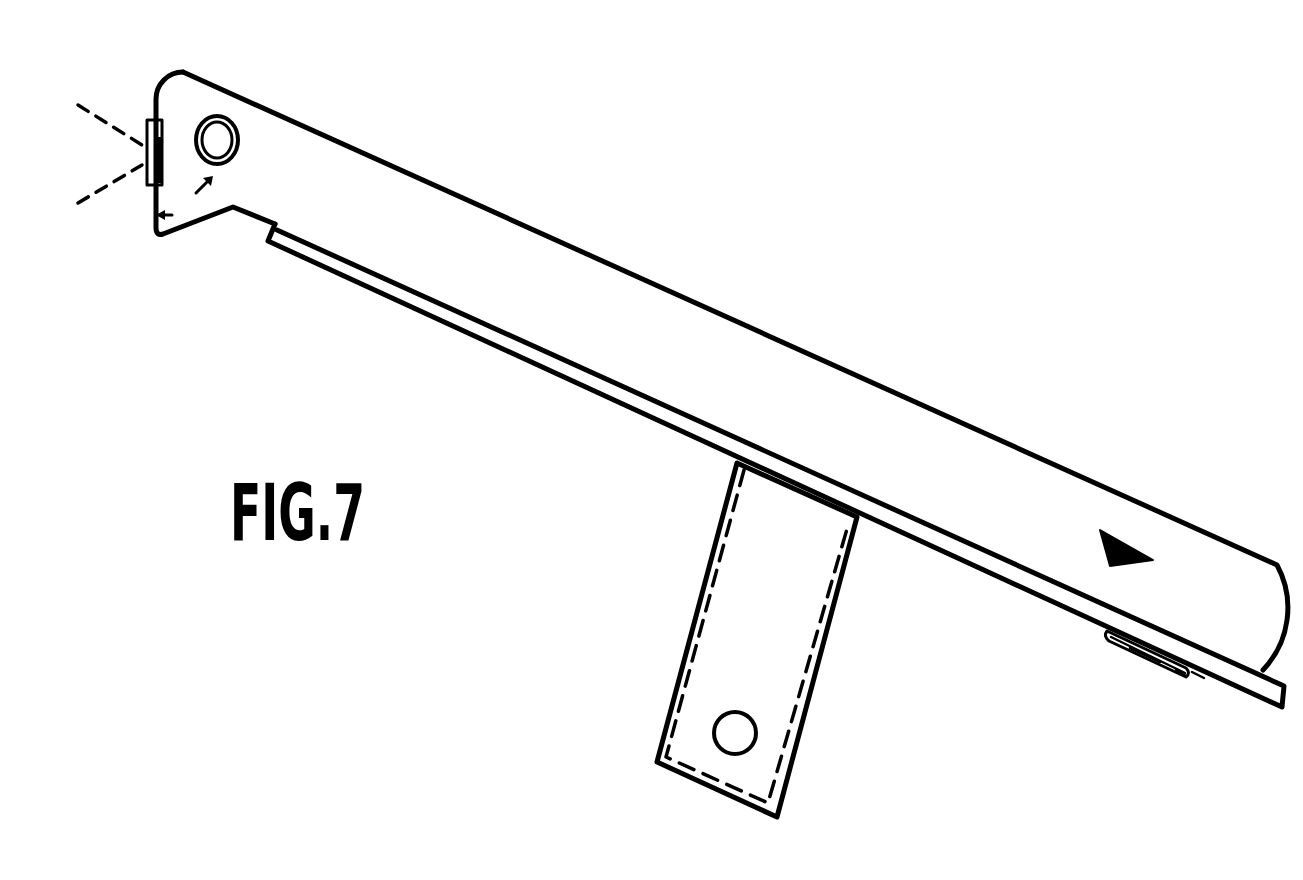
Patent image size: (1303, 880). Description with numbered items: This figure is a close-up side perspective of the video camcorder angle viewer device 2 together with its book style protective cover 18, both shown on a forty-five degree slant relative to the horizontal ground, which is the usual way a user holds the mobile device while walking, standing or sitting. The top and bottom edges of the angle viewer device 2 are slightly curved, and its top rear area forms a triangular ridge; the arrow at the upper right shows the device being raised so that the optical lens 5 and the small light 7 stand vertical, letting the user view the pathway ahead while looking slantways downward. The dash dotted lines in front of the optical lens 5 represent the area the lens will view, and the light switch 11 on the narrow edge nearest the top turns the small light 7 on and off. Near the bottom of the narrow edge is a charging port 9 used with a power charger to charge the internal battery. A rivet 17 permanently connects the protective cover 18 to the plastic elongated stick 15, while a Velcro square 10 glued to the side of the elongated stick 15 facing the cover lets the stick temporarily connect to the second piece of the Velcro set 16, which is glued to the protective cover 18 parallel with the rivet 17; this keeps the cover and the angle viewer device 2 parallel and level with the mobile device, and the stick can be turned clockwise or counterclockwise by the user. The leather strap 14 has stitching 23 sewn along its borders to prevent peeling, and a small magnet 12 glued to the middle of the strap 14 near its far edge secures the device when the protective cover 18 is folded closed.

The angle viewer device 2 is at (922, 470).
The optical lens 5 is at (146, 127).
The small light 7 is at (167, 160).
The charging port 9 is at (1117, 533).
The Velcro square 10 is at (1110, 634).
The light switch 11 is at (217, 138).
The small magnet 12 is at (727, 733).
The strap 14 is at (780, 663).
The elongated stick 15 is at (1140, 660).
The second piece of the Velcro set 16 is at (1198, 673).
The rivet 17 is at (1180, 673).
The book style protective cover 18 is at (315, 257).
The stitching 23 is at (737, 515).